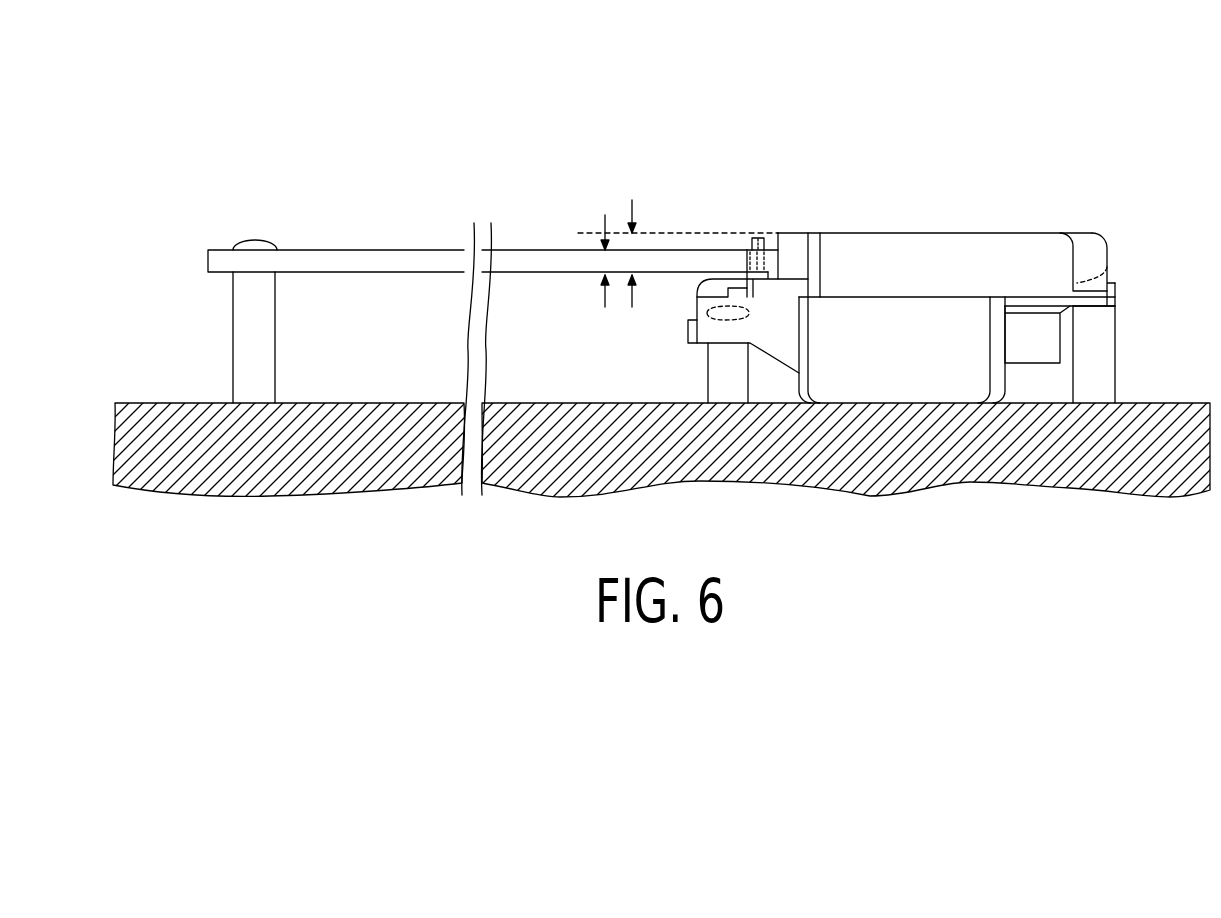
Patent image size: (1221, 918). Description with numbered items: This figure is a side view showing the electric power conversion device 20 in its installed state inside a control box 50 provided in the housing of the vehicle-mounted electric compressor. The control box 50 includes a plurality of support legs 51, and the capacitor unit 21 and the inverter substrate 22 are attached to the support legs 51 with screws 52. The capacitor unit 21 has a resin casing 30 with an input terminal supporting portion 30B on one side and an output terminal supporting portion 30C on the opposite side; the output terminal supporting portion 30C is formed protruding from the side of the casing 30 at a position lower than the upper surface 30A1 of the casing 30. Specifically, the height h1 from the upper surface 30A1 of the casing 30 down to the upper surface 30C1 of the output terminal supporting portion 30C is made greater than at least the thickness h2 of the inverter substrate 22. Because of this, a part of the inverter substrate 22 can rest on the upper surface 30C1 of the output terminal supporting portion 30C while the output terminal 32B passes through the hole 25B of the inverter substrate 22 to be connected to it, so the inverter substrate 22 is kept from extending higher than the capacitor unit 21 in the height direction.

The electric power conversion device 20 is at (704, 79).
The capacitor unit 21 is at (1018, 243).
The inverter substrate 22 is at (365, 258).
The hole 25B is at (750, 248).
The output terminal 32B is at (755, 237).
The casing 30 is at (855, 320).
The upper surface of the casing 30A1 is at (925, 233).
The input terminal supporting portion 30B is at (1128, 225).
The output terminal supporting portion 30C is at (708, 297).
The upper surface of the output terminal supporting portion 30C1 is at (767, 270).
The control box 50 is at (1160, 415).
The support leg 51 is at (243, 340).
The screw 52 is at (252, 240).
The height h1 is at (635, 258).
The thickness of the inverter substrate h2 is at (603, 258).